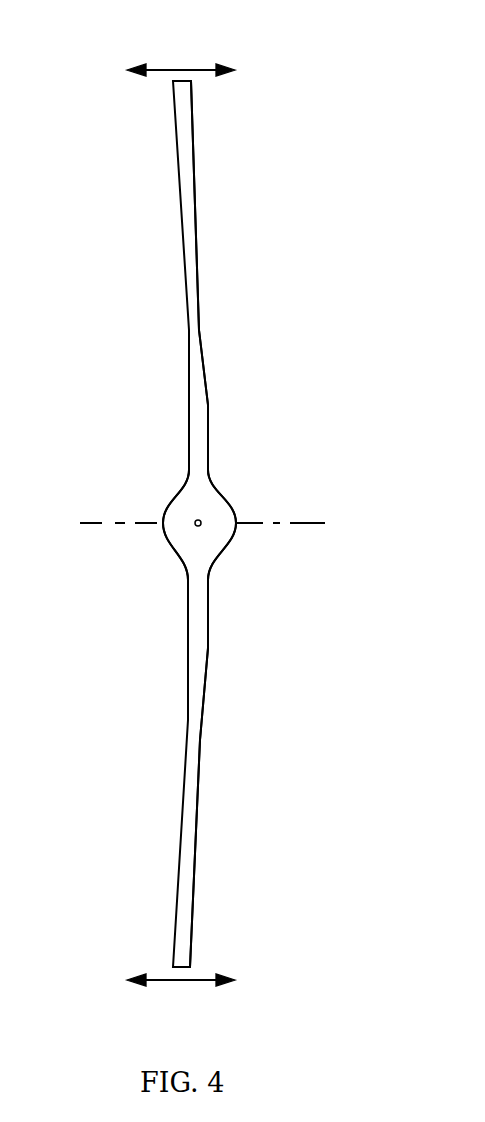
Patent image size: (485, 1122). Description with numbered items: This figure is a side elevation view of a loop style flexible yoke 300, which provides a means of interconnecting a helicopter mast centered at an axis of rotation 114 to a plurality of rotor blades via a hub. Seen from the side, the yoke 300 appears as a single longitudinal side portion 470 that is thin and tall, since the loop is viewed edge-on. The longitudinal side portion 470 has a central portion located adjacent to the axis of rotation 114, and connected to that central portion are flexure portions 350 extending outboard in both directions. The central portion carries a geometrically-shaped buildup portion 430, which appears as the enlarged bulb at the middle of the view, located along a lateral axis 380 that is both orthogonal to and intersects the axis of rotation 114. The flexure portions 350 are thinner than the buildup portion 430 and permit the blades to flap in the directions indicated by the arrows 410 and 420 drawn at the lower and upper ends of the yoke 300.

The loop style flexible yoke 300 is at (95, 171).
The flexure portion 350 is at (201, 310).
The longitudinal side portion 470 is at (197, 438).
The geometrically-shaped buildup portion 430 is at (223, 555).
The lateral axis 380 is at (196, 527).
The axis of rotation 114 is at (252, 520).
The arrow indicating flapping direction 420 is at (180, 68).
The arrow indicating flapping direction 410 is at (180, 984).